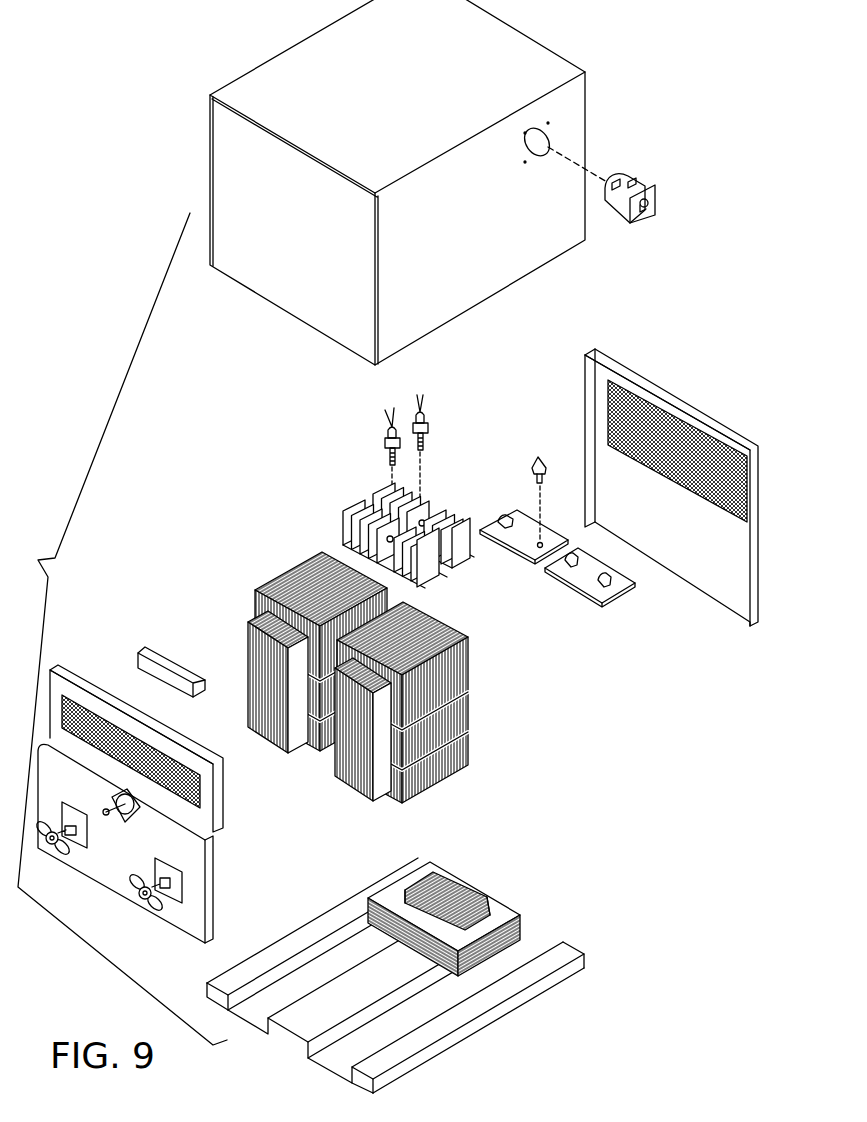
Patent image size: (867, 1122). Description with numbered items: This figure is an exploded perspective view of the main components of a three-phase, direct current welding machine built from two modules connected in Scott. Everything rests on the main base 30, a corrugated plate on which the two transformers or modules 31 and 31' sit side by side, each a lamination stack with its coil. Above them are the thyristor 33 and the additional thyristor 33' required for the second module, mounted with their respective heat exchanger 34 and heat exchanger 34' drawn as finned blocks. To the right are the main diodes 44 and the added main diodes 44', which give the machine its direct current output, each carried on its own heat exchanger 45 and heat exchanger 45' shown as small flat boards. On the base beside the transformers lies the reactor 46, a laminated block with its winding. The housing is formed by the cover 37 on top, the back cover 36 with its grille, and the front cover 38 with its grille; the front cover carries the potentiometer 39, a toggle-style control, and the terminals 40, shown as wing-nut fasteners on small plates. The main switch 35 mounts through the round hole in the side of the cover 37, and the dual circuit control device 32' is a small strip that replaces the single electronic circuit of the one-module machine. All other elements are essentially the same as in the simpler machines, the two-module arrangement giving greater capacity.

The main base 30 is at (395, 975).
The transformer or module 31 is at (317, 652).
The transformer or module 31' is at (420, 702).
The dual circuit control device 32' is at (172, 666).
The thyristor 33 is at (378, 446).
The additional thyristor 33' is at (438, 447).
The heat exchanger 34 is at (399, 535).
The heat exchanger 34' is at (454, 557).
The main switch 35 is at (604, 185).
The back cover 36 is at (671, 487).
The cover 37 is at (397, 182).
The front cover 38 is at (130, 804).
The potentiometer 39 is at (140, 812).
The terminals 40 is at (108, 861).
The main diodes 44 is at (539, 485).
The main diodes 44' is at (579, 582).
The heat exchanger 45 is at (524, 519).
The heat exchanger 45' is at (601, 582).
The reactor 46 is at (444, 919).